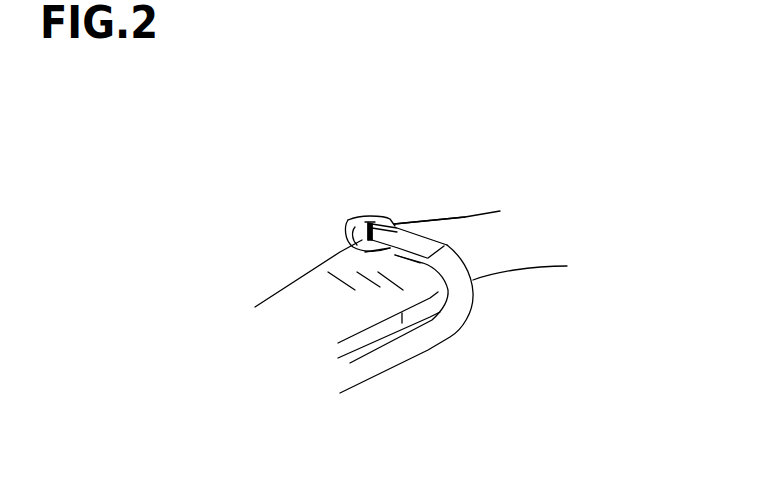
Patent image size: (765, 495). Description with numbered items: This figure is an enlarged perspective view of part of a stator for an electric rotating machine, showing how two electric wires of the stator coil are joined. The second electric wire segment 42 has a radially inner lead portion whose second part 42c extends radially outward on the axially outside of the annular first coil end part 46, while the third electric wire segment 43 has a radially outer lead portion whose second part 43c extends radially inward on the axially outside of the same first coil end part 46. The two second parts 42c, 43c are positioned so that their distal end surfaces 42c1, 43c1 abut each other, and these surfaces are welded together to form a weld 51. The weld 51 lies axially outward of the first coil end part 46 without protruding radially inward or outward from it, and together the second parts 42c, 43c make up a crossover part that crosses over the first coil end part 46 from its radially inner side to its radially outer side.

The second electric wire segment 42 is at (427, 338).
The second part 42c is at (427, 250).
The distal end surface 42c1 is at (471, 147).
The third electric wire segment 43 is at (374, 219).
The second part 43c is at (398, 228).
The distal end surface 43c1 is at (370, 231).
The first coil end part 46 is at (470, 232).
The weld 51 is at (393, 256).